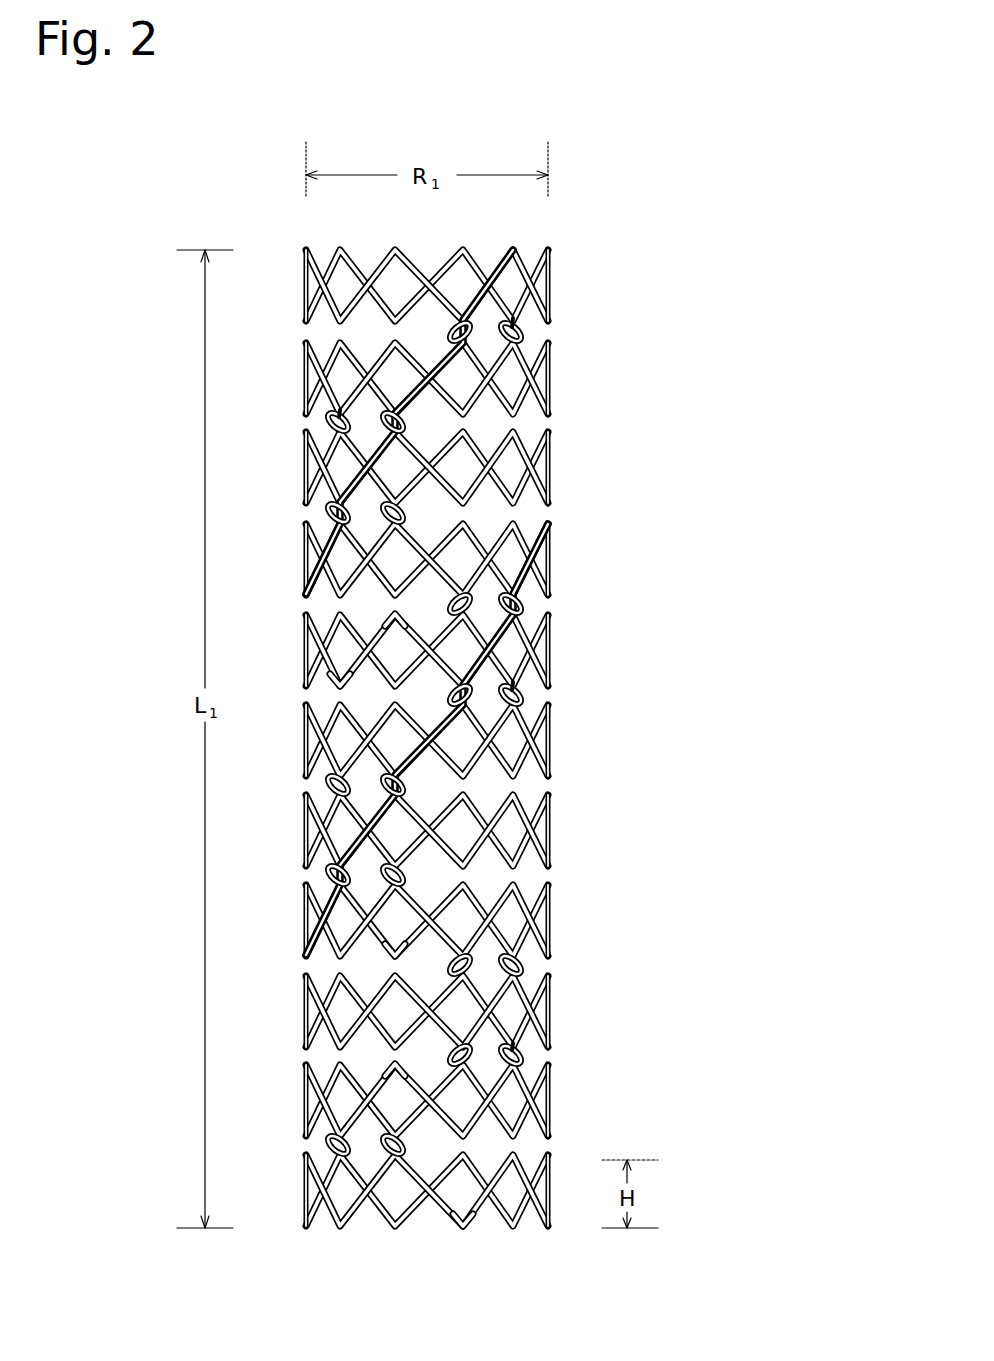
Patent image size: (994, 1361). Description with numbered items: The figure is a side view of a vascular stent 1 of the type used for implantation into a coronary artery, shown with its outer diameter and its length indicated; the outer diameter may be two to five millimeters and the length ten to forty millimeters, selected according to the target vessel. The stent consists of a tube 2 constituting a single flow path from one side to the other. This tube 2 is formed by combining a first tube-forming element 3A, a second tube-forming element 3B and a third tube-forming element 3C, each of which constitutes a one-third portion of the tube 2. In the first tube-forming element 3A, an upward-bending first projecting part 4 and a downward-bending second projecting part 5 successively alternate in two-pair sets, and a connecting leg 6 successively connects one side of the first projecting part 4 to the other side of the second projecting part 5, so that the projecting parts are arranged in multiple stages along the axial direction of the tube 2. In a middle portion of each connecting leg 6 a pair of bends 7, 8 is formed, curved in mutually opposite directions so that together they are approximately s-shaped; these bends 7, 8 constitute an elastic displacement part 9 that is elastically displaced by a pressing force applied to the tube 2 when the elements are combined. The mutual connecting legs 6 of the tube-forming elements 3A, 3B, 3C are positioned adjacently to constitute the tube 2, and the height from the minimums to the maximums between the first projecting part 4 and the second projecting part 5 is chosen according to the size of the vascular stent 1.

The vascular stent 1 is at (451, 736).
The tube 2 is at (552, 463).
The first tube-forming element 3A is at (552, 572).
The second tube-forming element 3B is at (553, 1107).
The third tube-forming element 3C is at (552, 742).
The first projecting part 4 is at (395, 613).
The second projecting part 5 is at (337, 678).
The connecting leg 6 is at (437, 352).
The bend 7 is at (540, 329).
The bend 8 is at (540, 337).
The elastic displacement part 9 is at (451, 734).